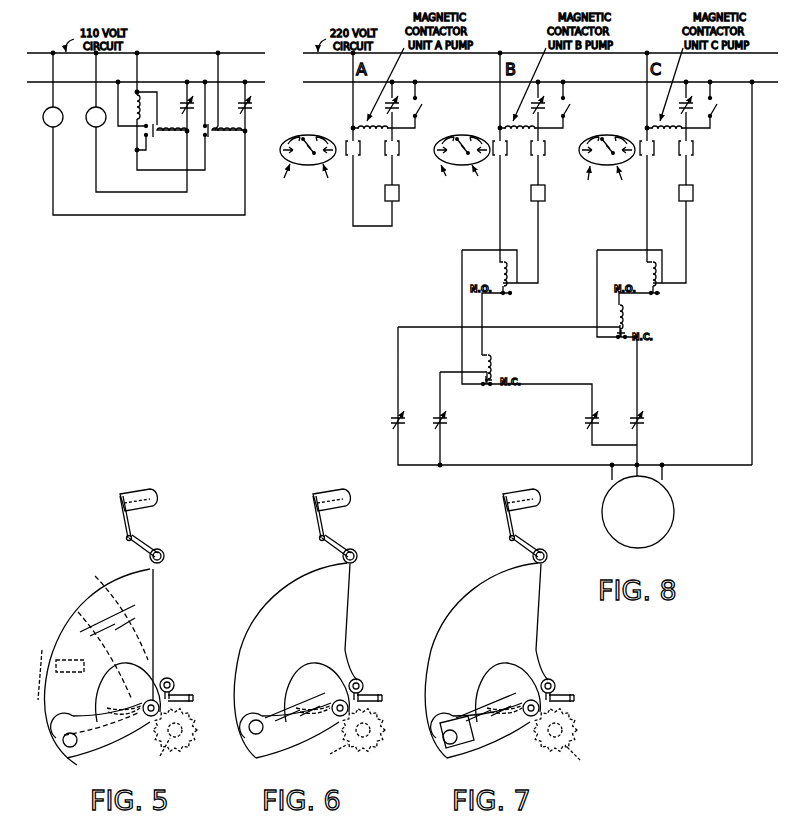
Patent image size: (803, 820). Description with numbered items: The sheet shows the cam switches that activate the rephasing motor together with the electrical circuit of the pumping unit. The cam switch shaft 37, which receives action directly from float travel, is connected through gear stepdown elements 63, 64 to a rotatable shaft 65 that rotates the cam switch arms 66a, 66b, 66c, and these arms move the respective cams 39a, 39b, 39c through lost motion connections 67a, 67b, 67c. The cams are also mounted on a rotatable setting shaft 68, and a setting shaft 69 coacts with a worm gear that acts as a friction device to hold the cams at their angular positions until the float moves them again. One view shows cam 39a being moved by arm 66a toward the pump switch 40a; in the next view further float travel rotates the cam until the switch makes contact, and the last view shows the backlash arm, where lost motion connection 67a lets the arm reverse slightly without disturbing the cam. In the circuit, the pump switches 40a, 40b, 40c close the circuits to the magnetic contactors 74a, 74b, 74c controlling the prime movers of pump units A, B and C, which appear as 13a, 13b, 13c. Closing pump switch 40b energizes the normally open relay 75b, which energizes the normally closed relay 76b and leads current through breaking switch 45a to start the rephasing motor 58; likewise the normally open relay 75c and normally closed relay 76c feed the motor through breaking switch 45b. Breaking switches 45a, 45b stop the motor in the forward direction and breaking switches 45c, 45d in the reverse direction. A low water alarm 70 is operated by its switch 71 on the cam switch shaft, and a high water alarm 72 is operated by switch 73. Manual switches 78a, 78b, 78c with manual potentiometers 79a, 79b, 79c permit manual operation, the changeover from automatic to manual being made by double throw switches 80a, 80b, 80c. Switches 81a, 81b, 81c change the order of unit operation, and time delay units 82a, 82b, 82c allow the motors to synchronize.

In FIG. 8, the low water alarm 70 is at (50, 123).
In FIG. 8, the high water alarm 72 is at (92, 123).
In FIG. 8, the high water alarm switch 73 is at (182, 103).
In FIG. 8, the low water alarm switch 71 is at (250, 110).
In FIG. 8, the double throw switch 80a is at (310, 139).
In FIG. 8, the double throw switch 80b is at (448, 138).
In FIG. 8, the double throw switch 80c is at (601, 138).
In FIG. 8, the manual potentiometer 79a is at (282, 179).
In FIG. 8, the manual potentiometer 79b is at (444, 180).
In FIG. 8, the manual potentiometer 79c is at (588, 181).
In FIG. 8, the pump 13a is at (330, 179).
In FIG. 8, the pump 13b is at (482, 180).
In FIG. 8, the pump 13c is at (624, 179).
In FIG. 8, the pump switch 40a is at (397, 96).
In FIG. 5, the pump switch 40a is at (145, 494).
In FIG. 6, the pump switch 40a is at (328, 492).
In FIG. 7, the pump switch 40a is at (504, 494).
In FIG. 8, the pump switch 40b is at (544, 96).
In FIG. 8, the pump switch 40c is at (691, 96).
In FIG. 8, the manual switch 78a is at (420, 110).
In FIG. 8, the manual switch 78b is at (569, 112).
In FIG. 8, the manual switch 78c is at (715, 110).
In FIG. 8, the magnetic contactor 74a is at (370, 136).
In FIG. 8, the magnetic contactor 74b is at (518, 135).
In FIG. 8, the magnetic contactor 74c is at (665, 133).
In FIG. 8, the switch 81a is at (400, 154).
In FIG. 8, the switch 81b is at (543, 152).
In FIG. 8, the switch 81c is at (697, 148).
In FIG. 8, the time delay unit 82a is at (400, 197).
In FIG. 8, the time delay unit 82b is at (545, 198).
In FIG. 8, the time delay unit 82c is at (693, 198).
In FIG. 8, the normally open relay 75b is at (500, 270).
In FIG. 8, the normally open relay 75c is at (648, 272).
In FIG. 8, the normally closed relay 76b is at (493, 359).
In FIG. 8, the normally closed relay 76c is at (630, 316).
In FIG. 8, the breaking switch 45a is at (447, 413).
In FIG. 8, the breaking switch 45b is at (392, 416).
In FIG. 8, the breaking switch 45c is at (646, 420).
In FIG. 8, the breaking switch 45d is at (585, 416).
In FIG. 8, the rephasing motor 58 is at (658, 534).
In FIG. 5, the cam element 39a is at (128, 572).
In FIG. 6, the cam element 39a is at (304, 584).
In FIG. 7, the cam element 39a is at (494, 586).
In FIG. 5, the cam element 39b is at (92, 576).
In FIG. 5, the cam element 39c is at (76, 612).
In FIG. 5, the rotatable shaft 65 is at (149, 700).
In FIG. 6, the rotatable shaft 65 is at (336, 702).
In FIG. 7, the rotatable shaft 65 is at (527, 702).
In FIG. 5, the cam switch arm 66a is at (112, 752).
In FIG. 6, the cam switch arm 66a is at (296, 750).
In FIG. 7, the cam switch arm 66a is at (515, 738).
In FIG. 5, the cam switch arm 66b is at (70, 732).
In FIG. 5, the cam switch arm 66c is at (125, 676).
In FIG. 5, the lost motion connection 67a is at (66, 748).
In FIG. 7, the lost motion connection 67a is at (460, 746).
In FIG. 5, the lost motion connection 67b is at (56, 668).
In FIG. 5, the lost motion connection 67c is at (42, 650).
In FIG. 5, the rotatable setting shaft 68 is at (174, 683).
In FIG. 6, the rotatable setting shaft 68 is at (360, 681).
In FIG. 7, the rotatable setting shaft 68 is at (553, 682).
In FIG. 5, the rotatable setting shaft 69 is at (190, 703).
In FIG. 6, the rotatable setting shaft 69 is at (383, 702).
In FIG. 7, the rotatable setting shaft 69 is at (574, 702).
In FIG. 5, the gear stepdown element 64 is at (143, 735).
In FIG. 6, the gear stepdown element 64 is at (320, 710).
In FIG. 7, the gear stepdown element 64 is at (510, 710).
In FIG. 5, the gear stepdown element 63 is at (164, 756).
In FIG. 6, the gear stepdown element 63 is at (326, 753).
In FIG. 7, the gear stepdown element 63 is at (582, 759).
In FIG. 5, the cam switch shaft 37 is at (190, 744).
In FIG. 6, the cam switch shaft 37 is at (382, 738).
In FIG. 7, the cam switch shaft 37 is at (578, 735).